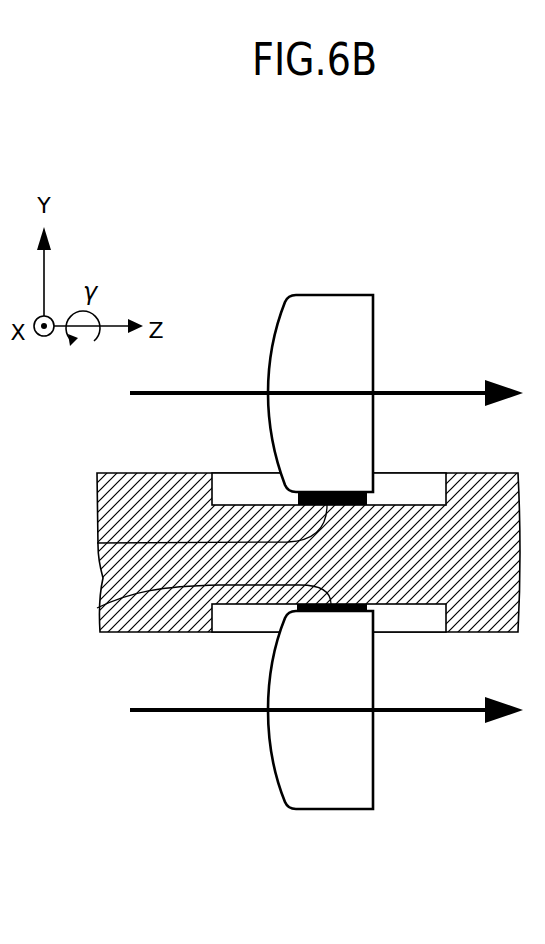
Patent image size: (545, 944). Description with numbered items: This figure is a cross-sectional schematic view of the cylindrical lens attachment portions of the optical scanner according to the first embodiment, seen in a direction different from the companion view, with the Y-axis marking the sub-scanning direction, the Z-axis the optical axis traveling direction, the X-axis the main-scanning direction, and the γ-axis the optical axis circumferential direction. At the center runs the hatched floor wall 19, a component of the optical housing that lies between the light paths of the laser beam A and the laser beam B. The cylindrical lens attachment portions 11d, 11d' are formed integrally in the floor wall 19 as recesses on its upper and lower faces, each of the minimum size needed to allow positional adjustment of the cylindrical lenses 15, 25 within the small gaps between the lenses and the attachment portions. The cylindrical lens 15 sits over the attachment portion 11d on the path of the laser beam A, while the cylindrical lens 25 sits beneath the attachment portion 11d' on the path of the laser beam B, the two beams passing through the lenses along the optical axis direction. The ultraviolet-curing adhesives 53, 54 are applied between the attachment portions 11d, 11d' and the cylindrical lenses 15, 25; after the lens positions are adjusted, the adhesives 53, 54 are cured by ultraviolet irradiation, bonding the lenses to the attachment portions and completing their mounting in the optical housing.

The cylindrical lens 15 is at (322, 283).
The cylindrical lens 25 is at (318, 820).
The floor wall 19 is at (163, 533).
The cylindrical lens attachment portion 11d is at (351, 367).
The cylindrical lens attachment portion 11d' is at (358, 733).
The ultraviolet-curing adhesive 53 is at (97, 543).
The ultraviolet-curing adhesive 54 is at (97, 608).
The laser beam A is at (450, 381).
The laser beam B is at (452, 724).